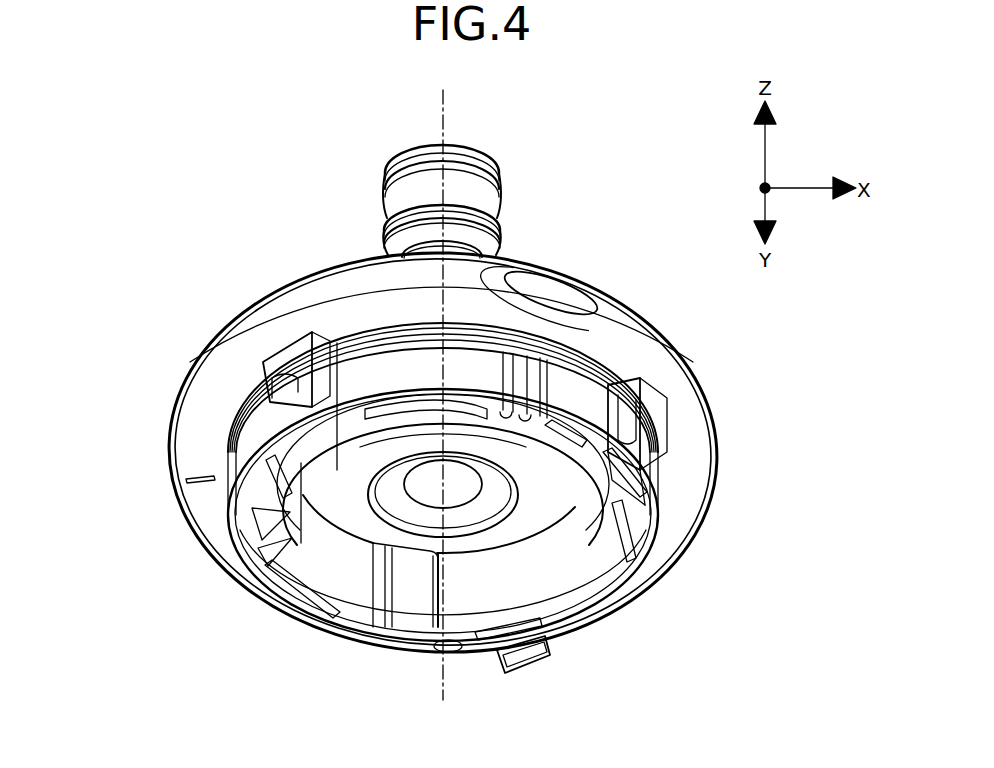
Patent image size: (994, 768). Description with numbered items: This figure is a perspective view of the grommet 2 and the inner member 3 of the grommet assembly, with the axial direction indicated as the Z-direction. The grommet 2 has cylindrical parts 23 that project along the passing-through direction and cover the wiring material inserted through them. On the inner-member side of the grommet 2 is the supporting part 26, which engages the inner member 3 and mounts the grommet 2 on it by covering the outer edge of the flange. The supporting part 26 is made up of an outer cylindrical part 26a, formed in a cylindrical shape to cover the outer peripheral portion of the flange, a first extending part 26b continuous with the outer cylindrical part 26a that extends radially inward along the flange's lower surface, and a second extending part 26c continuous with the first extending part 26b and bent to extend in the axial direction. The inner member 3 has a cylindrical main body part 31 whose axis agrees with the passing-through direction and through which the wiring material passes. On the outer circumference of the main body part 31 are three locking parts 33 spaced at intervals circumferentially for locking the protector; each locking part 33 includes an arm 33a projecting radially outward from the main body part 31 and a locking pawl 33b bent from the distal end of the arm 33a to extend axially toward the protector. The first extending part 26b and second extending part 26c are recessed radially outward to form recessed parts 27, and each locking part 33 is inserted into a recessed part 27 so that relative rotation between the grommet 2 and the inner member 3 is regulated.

The grommet 2 is at (634, 310).
The inner member 3 is at (572, 392).
The cylindrical part 23 is at (390, 170).
The supporting part 26 is at (366, 335).
The outer cylindrical part 26a is at (300, 312).
The first extending part 26b is at (277, 338).
The second extending part 26c is at (310, 276).
The recessed part 27 is at (293, 370).
The main body part 31 is at (257, 443).
The locking part 33 is at (474, 507).
The arm 33a is at (657, 489).
The locking pawl 33b is at (657, 420).